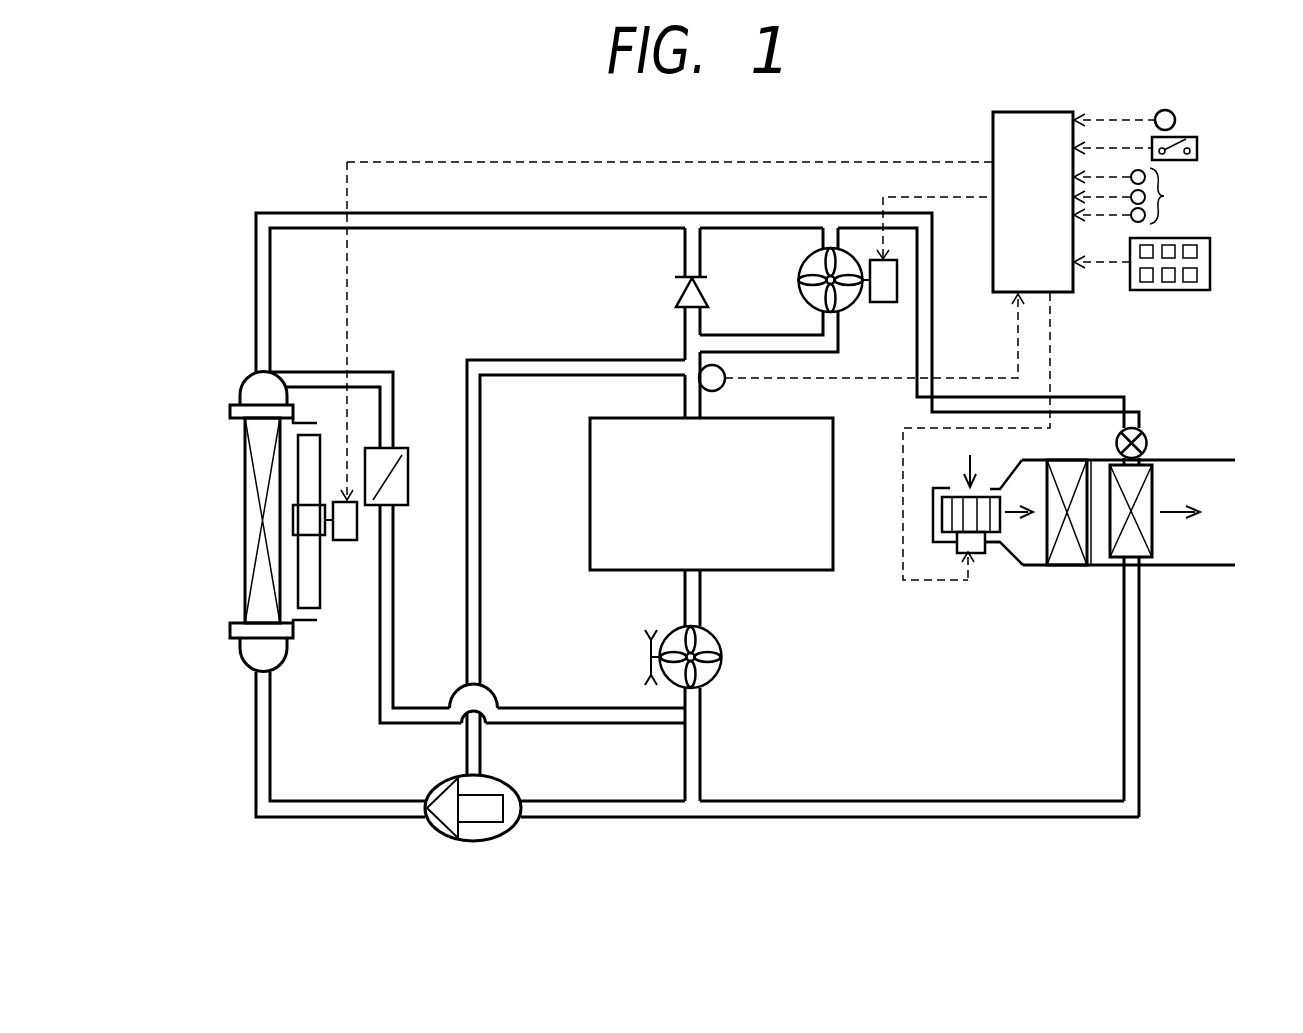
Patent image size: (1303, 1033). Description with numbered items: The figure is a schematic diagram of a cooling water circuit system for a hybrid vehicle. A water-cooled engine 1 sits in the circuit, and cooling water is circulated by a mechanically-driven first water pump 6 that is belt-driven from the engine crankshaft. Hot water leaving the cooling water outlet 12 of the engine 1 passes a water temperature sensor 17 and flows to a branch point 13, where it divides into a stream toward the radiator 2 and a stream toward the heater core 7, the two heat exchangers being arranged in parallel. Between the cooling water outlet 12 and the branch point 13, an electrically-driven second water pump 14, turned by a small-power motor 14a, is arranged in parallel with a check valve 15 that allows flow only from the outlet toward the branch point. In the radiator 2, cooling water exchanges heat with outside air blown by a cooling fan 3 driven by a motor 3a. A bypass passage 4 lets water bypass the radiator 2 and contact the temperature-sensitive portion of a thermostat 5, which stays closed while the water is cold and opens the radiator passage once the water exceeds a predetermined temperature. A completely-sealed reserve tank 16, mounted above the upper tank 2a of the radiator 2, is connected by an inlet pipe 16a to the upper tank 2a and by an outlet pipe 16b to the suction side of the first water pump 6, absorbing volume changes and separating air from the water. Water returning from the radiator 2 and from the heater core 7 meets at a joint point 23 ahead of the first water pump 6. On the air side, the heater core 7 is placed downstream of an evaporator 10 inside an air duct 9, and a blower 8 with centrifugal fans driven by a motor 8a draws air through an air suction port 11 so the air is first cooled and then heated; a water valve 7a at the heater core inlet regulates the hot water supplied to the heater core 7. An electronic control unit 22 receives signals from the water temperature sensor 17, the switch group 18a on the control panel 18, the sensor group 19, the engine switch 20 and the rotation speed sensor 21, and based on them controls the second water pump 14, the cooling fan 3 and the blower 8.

The water-cooled engine 1 is at (795, 562).
The radiator 2 is at (246, 523).
The upper tank 2a is at (248, 394).
The cooling fan 3 is at (313, 460).
The motor 3a is at (346, 542).
The bypass passage 4 is at (531, 362).
The thermostat 5 is at (505, 782).
The first water pump 6 is at (722, 670).
The heater core 7 is at (1146, 500).
The water valve 7a is at (1116, 443).
The blower 8 is at (953, 510).
The motor 8a is at (983, 555).
The air duct 9 is at (1212, 460).
The evaporator 10 is at (1067, 565).
The air suction port 11 is at (980, 488).
The cooling water outlet 12 is at (685, 405).
The branch point 13 is at (693, 226).
The second water pump 14 is at (798, 275).
The motor 14a is at (882, 304).
The check valve 15 is at (675, 292).
The reserve tank 16 is at (409, 478).
The inlet pipe 16a is at (393, 370).
The outlet pipe 16b is at (553, 710).
The water temperature sensor 17 is at (724, 386).
The control panel 18 is at (1170, 291).
The switch group 18a is at (1193, 278).
The sensor group 19 is at (1137, 196).
The engine switch 20 is at (1198, 150).
The rotation speed sensor 21 is at (1175, 120).
The electronic control unit 22 is at (993, 128).
The joint point 23 is at (692, 818).